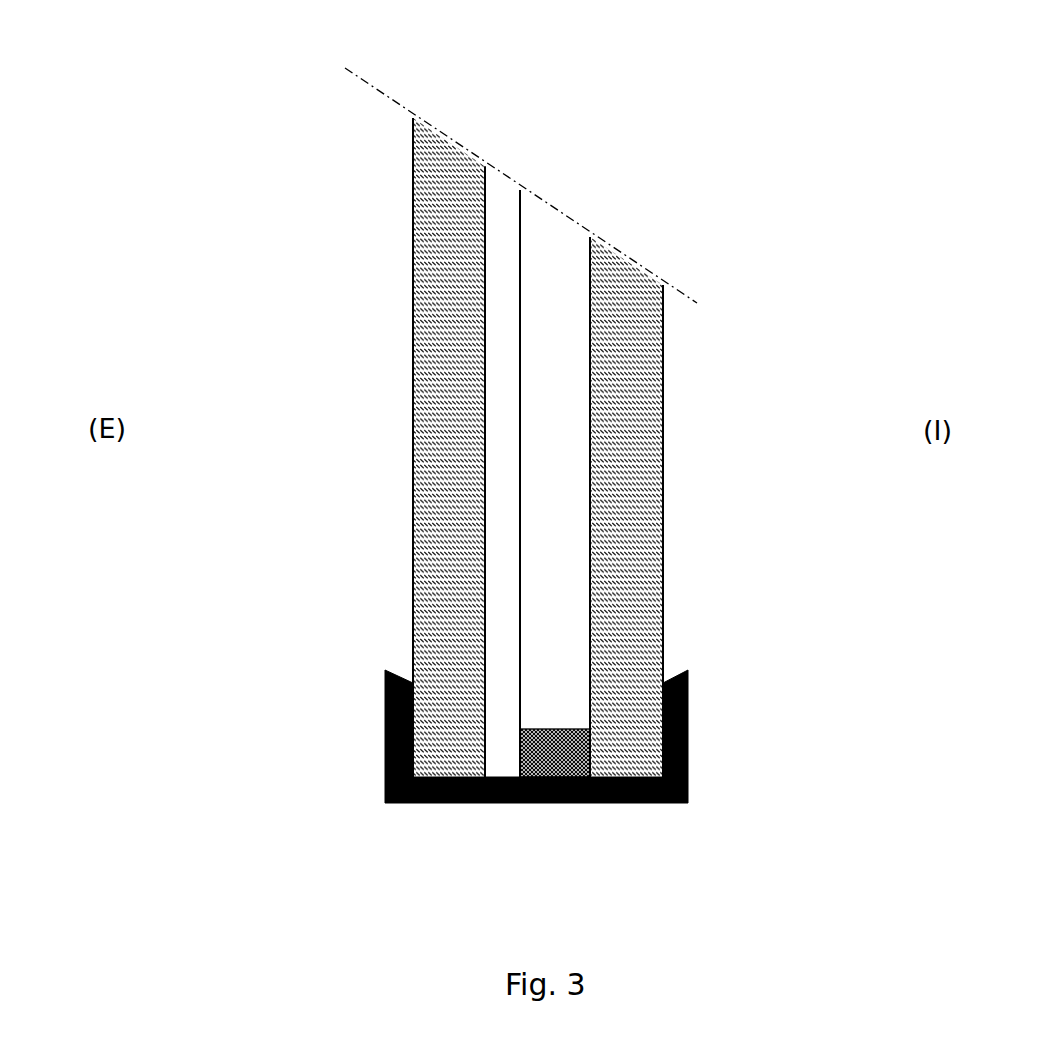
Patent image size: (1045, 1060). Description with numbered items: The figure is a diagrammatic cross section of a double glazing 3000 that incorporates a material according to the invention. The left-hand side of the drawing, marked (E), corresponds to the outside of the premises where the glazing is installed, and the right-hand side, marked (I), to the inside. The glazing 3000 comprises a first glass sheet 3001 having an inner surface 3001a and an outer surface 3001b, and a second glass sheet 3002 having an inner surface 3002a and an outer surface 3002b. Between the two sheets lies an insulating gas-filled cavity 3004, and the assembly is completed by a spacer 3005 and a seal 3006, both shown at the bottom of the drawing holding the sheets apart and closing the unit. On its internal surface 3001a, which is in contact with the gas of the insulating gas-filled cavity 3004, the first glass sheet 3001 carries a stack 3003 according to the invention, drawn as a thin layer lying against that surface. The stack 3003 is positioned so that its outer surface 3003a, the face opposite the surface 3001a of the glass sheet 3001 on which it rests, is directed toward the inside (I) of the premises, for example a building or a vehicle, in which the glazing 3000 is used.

The double glazing 3000 is at (533, 114).
The first glass sheet 3001 is at (450, 363).
The inner surface of the first glass sheet 3001a is at (489, 243).
The outer surface of the first glass sheet 3001b is at (411, 212).
The second glass sheet 3002 is at (637, 422).
The inner surface of the second glass sheet 3002a is at (665, 621).
The outer surface of the second glass sheet 3002b is at (588, 600).
The stack 3003 is at (502, 530).
The outer surface of the stack 3003a is at (524, 285).
The insulating gas-filled cavity 3004 is at (555, 560).
The spacer 3005 is at (518, 752).
The seal 3006 is at (689, 756).